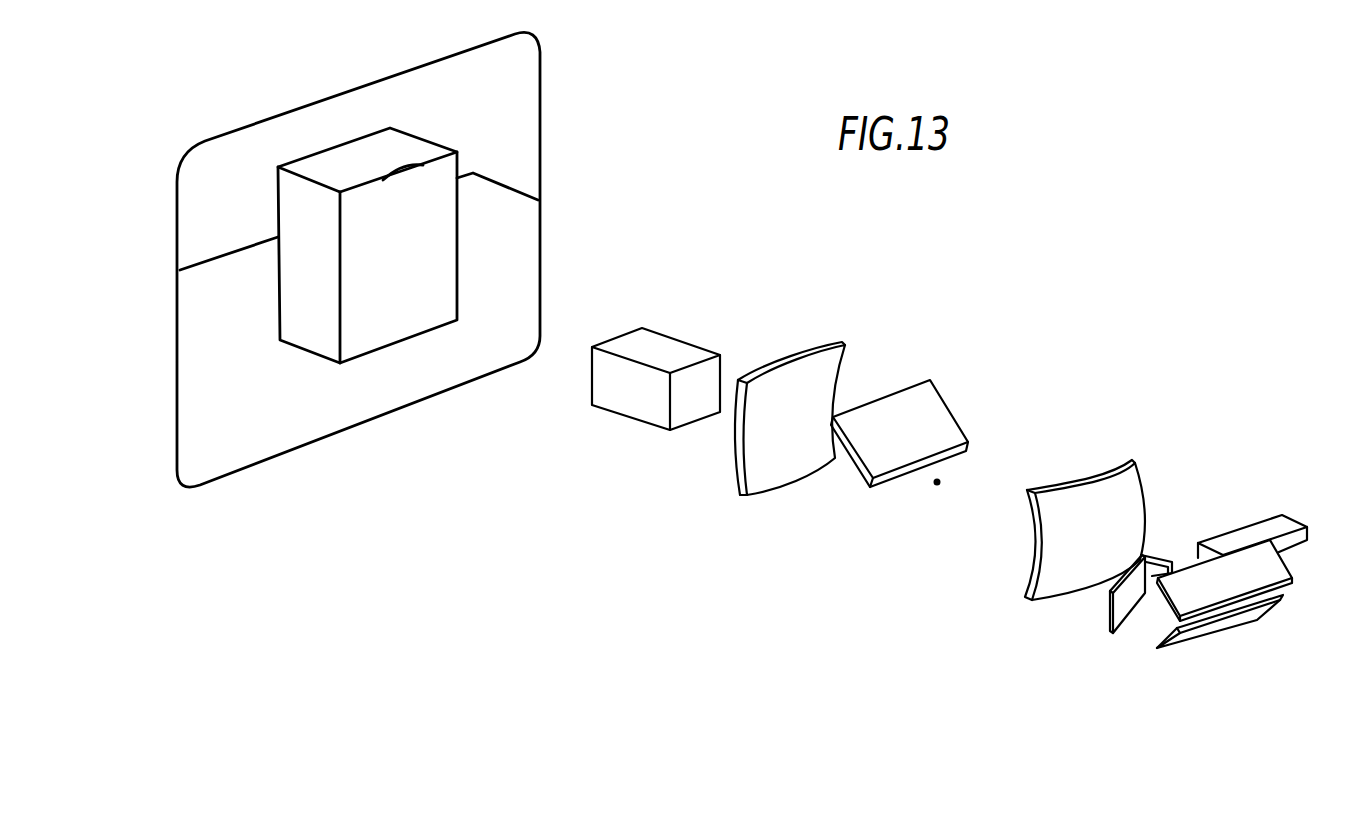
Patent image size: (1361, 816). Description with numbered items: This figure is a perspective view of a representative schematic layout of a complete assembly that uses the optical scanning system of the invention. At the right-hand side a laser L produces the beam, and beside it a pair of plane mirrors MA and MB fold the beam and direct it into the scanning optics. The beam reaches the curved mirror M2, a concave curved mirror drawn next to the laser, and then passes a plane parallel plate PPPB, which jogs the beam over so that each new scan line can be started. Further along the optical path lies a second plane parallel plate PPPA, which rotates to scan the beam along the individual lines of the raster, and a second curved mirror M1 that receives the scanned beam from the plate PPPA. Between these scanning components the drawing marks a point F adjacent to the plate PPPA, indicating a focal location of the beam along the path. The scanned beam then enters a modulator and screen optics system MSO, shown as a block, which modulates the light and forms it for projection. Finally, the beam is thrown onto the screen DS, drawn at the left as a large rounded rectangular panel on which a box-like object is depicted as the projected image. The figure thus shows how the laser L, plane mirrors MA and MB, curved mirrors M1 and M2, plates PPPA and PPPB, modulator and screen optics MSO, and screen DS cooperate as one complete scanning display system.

The screen DS is at (310, 420).
The modulator and screen optics system MSO is at (640, 342).
The curved mirror M1 is at (810, 404).
The plane parallel plate PPPA is at (925, 425).
The focal point F is at (935, 495).
The curved mirror M2 is at (1098, 514).
The plane parallel plate PPPB is at (1120, 607).
The laser L is at (1245, 533).
The plane mirror MA is at (1263, 573).
The plane mirror MB is at (1183, 638).